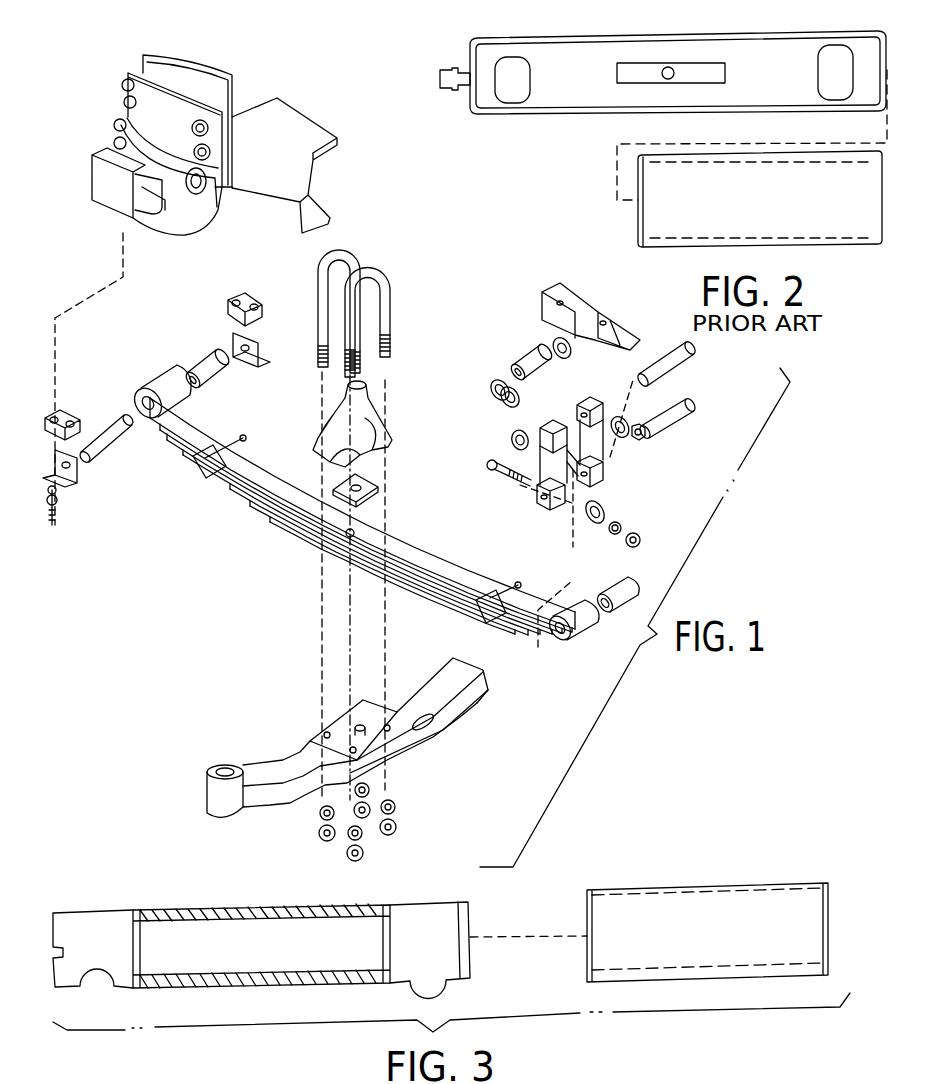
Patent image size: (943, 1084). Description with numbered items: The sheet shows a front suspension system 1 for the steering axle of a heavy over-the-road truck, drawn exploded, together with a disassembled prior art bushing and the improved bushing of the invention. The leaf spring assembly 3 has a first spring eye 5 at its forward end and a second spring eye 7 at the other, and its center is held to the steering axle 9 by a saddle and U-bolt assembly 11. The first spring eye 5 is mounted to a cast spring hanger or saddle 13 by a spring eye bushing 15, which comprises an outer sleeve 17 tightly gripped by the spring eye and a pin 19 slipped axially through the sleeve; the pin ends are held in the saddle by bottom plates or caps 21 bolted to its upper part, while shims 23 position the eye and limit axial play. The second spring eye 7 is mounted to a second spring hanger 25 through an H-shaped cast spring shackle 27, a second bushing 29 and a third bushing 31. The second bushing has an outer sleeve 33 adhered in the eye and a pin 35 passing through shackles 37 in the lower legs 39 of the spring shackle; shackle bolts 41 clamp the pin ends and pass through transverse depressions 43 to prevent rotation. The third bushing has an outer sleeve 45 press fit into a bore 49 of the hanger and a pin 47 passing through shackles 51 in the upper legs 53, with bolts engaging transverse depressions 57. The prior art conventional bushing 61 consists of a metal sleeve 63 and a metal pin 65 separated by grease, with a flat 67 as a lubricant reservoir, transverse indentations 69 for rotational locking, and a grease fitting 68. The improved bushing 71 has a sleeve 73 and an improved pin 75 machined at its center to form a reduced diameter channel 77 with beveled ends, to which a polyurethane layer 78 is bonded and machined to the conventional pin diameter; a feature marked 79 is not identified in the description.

In FIG. 1, the front suspension system 1 is at (176, 641).
In FIG. 1, the leaf spring assembly 3 is at (297, 537).
In FIG. 1, the first spring eye 5 is at (145, 387).
In FIG. 1, the second spring eye 7 is at (590, 633).
In FIG. 1, the steering axle 9 is at (260, 765).
In FIG. 1, the saddle and U-bolt assembly 11 is at (382, 291).
In FIG. 1, the spring hanger or saddle 13 is at (100, 197).
In FIG. 1, the spring eye bushing 15 is at (184, 353).
In FIG. 1, the outer sleeve 17 is at (217, 380).
In FIG. 1, the pin 19 is at (103, 440).
In FIG. 1, the bottom plates or caps 21 is at (250, 307).
In FIG. 1, the shims 23 is at (257, 360).
In FIG. 1, the second spring hanger 25 is at (565, 290).
In FIG. 1, the cast spring shackle 27 is at (583, 483).
In FIG. 1, the second bushing 29 is at (633, 600).
In FIG. 1, the third bushing 31 is at (538, 343).
In FIG. 1, the outer sleeve 33 is at (622, 590).
In FIG. 1, the pin 35 is at (693, 413).
In FIG. 1, the shackles 37 is at (557, 507).
In FIG. 1, the lower legs 39 is at (603, 480).
In FIG. 1, the shackle bolts 41 is at (507, 477).
In FIG. 1, the transverse depressions 43 is at (687, 410).
In FIG. 1, the outer sleeve 45 is at (510, 352).
In FIG. 1, the pin 47 is at (670, 347).
In FIG. 1, the bore 49 is at (563, 413).
In FIG. 1, the shackles 51 is at (537, 456).
In FIG. 1, the upper legs 53 is at (580, 398).
In FIG. 1, the transverse depressions 57 is at (692, 352).
In FIG. 2, the conventional bushing 61 is at (587, 147).
In FIG. 2, the metal sleeve 63 is at (813, 250).
In FIG. 2, the metal pin 65 is at (597, 92).
In FIG. 2, the flat 67 is at (723, 47).
In FIG. 2, the grease fitting 68 is at (450, 90).
In FIG. 2, the transverse indentations 69 is at (522, 70).
In FIG. 3, the improved bushing 71 is at (587, 1080).
In FIG. 3, the sleeve 73 is at (727, 885).
In FIG. 3, the improved pin 75 is at (261, 941).
In FIG. 3, the reduced diameter channel 77 is at (217, 982).
In FIG. 3, the polyurethane layer 78 is at (280, 984).
In FIG. 3, the notch 79 is at (100, 980).